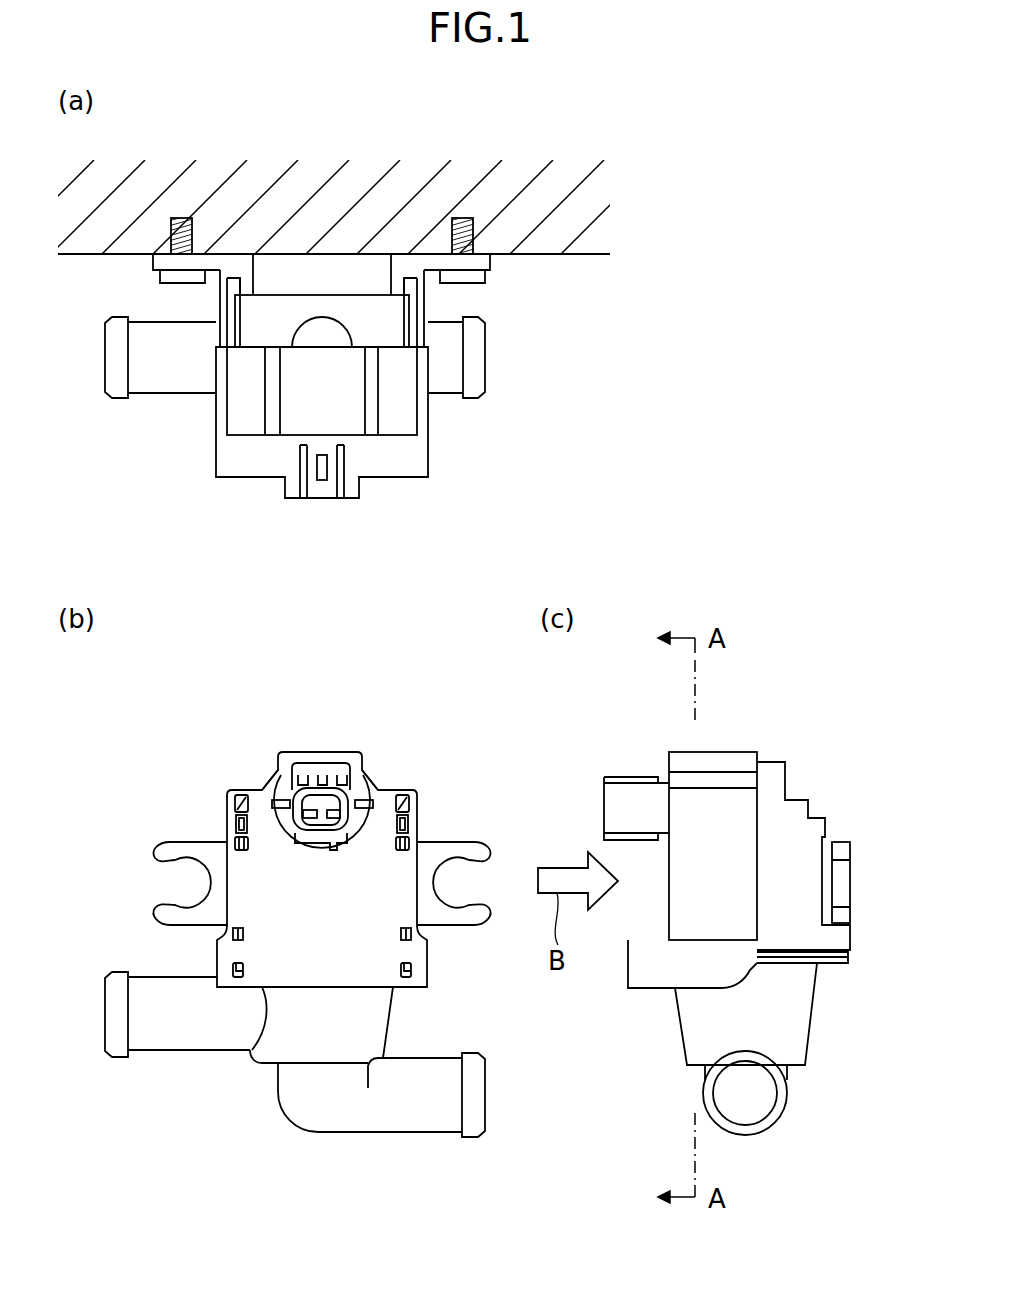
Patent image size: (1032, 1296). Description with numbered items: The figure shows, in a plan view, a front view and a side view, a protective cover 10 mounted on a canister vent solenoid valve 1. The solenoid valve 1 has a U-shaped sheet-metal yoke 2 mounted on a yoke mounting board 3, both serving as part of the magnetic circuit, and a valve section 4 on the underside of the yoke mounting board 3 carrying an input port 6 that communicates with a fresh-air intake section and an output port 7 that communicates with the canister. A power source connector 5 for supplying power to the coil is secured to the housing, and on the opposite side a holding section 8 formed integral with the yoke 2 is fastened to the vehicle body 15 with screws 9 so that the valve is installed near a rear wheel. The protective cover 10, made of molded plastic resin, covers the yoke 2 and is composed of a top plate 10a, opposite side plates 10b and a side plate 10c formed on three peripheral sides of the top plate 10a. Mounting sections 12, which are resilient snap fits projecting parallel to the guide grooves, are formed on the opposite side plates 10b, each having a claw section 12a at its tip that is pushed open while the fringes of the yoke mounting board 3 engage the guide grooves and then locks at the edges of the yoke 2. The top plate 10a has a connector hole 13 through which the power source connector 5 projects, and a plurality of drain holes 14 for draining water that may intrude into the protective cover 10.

The canister vent solenoid valve 1 is at (112, 400).
The yoke 2 is at (335, 308).
The yoke mounting board 3 is at (425, 308).
The valve section 4 is at (380, 1020).
The power source connector 5 is at (320, 492).
The input port 6 is at (118, 360).
The output port 7 is at (475, 360).
The holding section 8 is at (153, 265).
The screws 9 is at (183, 218).
The protective cover 10 is at (395, 465).
The top plate 10a is at (263, 812).
The opposite side plates 10b is at (733, 827).
The side plate 10c is at (405, 418).
The mounting section 12 is at (230, 327).
The claw section 12a is at (240, 292).
The connector hole 13 is at (365, 790).
The drain holes 14 is at (222, 945).
The vehicle body 15 is at (605, 257).